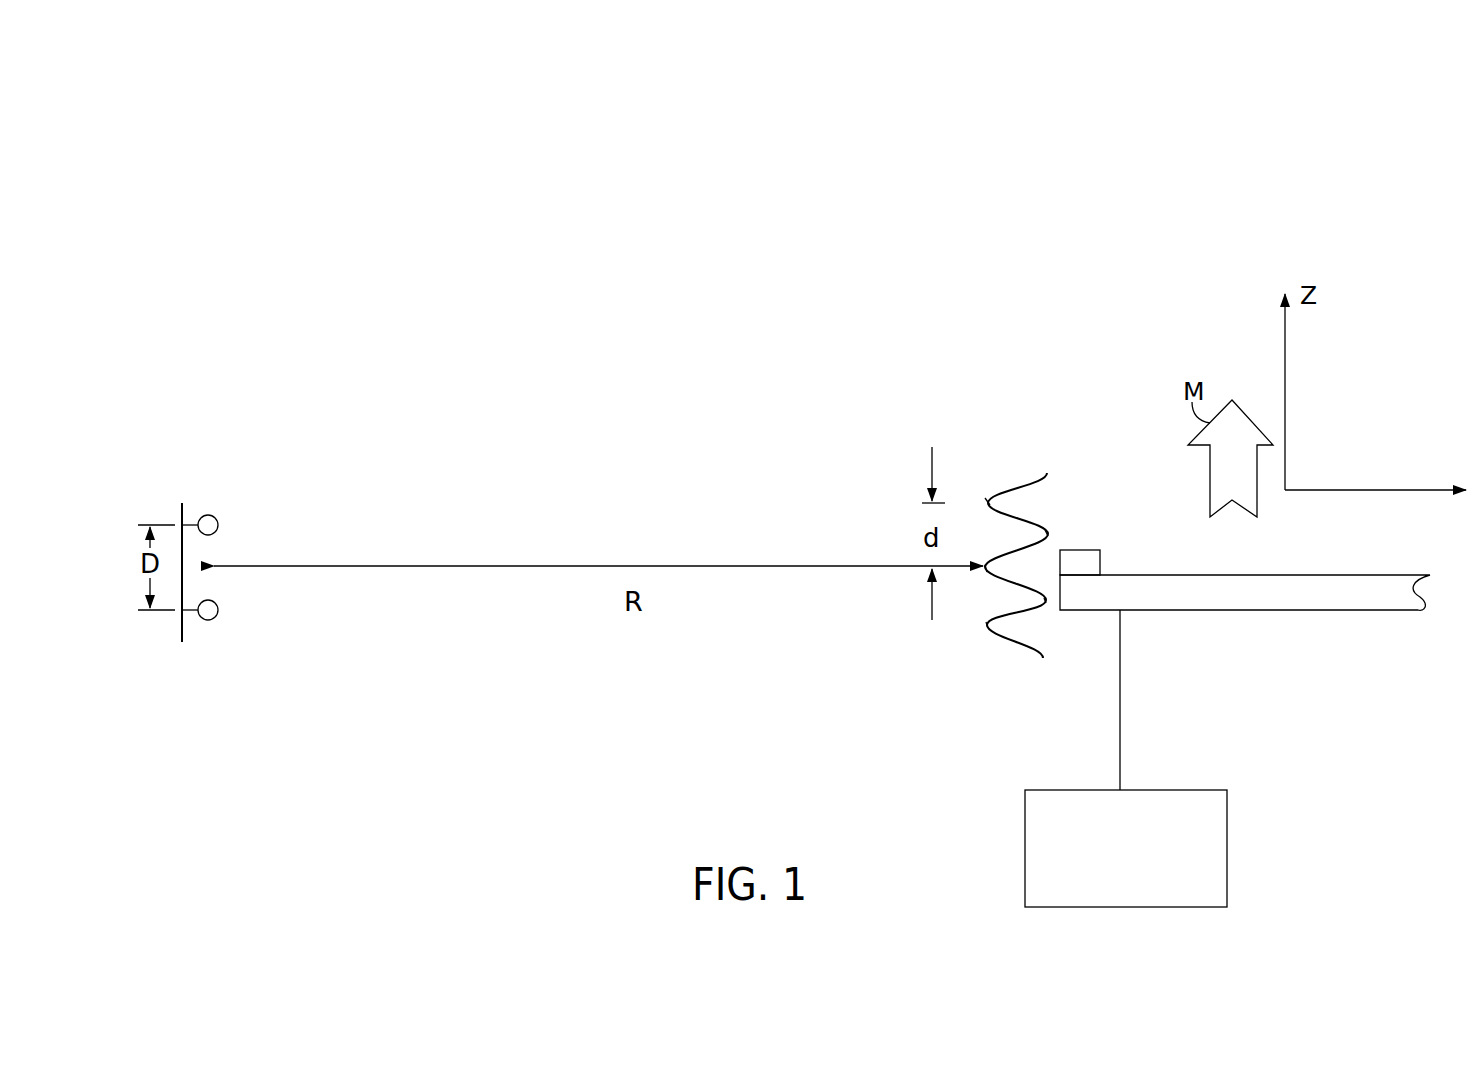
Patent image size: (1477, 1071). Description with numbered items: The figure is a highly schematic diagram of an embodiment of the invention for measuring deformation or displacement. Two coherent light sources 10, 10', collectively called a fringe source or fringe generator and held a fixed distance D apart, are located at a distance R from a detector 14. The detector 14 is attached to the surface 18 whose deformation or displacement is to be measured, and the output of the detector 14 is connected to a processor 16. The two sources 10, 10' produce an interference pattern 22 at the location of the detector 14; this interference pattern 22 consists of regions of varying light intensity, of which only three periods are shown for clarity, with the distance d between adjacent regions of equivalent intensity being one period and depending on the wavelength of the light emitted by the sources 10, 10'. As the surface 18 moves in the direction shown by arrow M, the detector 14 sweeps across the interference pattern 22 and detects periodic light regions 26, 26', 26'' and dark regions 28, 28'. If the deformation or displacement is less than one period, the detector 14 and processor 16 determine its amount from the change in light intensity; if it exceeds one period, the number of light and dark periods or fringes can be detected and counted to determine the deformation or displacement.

The coherent light source 10 is at (220, 507).
The coherent light source 10' is at (223, 630).
The detector 14 is at (1088, 550).
The processor 16 is at (1185, 910).
The surface 18 is at (1165, 575).
The interference pattern 22 is at (997, 677).
The light region 26 is at (965, 650).
The light region 26' is at (968, 584).
The light region 26'' is at (979, 481).
The dark region 28 is at (1064, 625).
The dark region 28' is at (1052, 512).